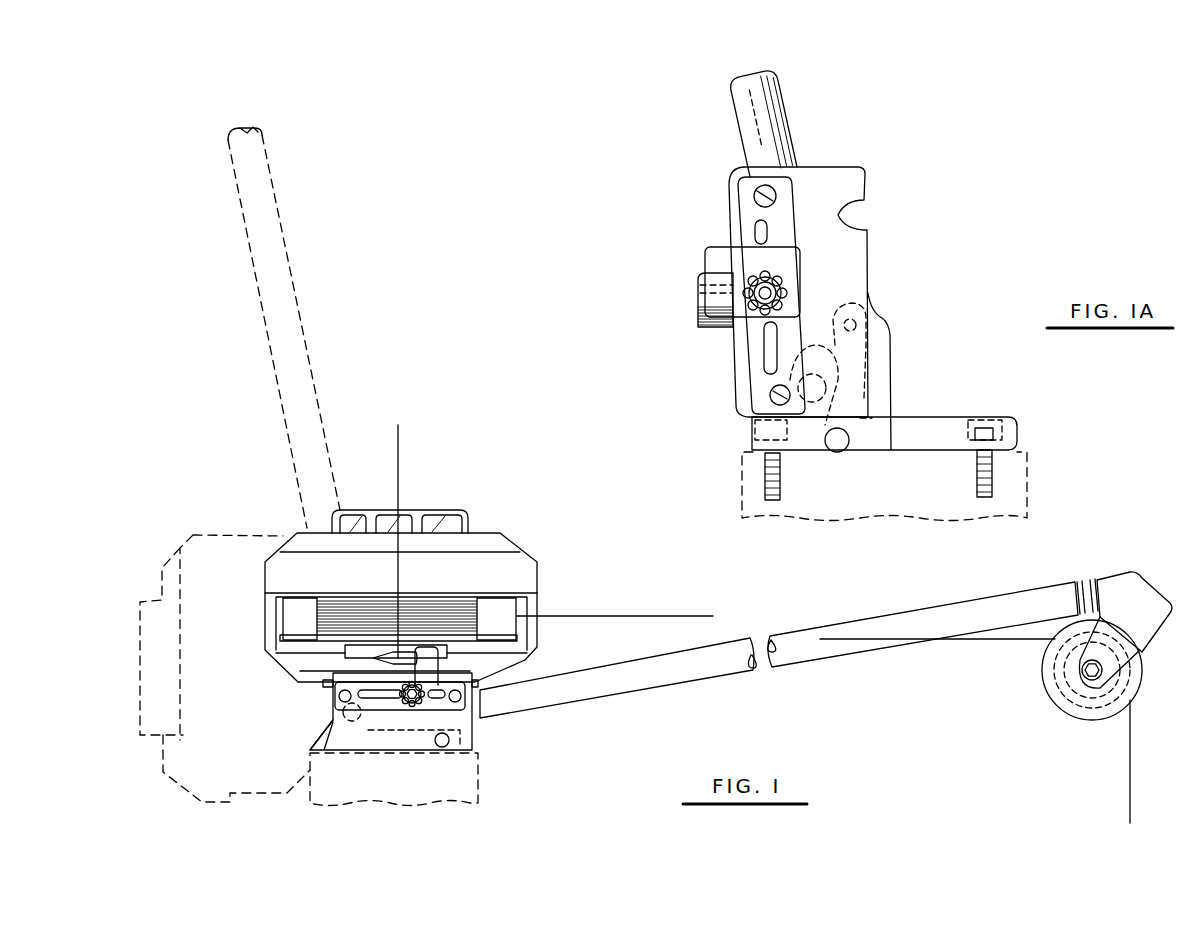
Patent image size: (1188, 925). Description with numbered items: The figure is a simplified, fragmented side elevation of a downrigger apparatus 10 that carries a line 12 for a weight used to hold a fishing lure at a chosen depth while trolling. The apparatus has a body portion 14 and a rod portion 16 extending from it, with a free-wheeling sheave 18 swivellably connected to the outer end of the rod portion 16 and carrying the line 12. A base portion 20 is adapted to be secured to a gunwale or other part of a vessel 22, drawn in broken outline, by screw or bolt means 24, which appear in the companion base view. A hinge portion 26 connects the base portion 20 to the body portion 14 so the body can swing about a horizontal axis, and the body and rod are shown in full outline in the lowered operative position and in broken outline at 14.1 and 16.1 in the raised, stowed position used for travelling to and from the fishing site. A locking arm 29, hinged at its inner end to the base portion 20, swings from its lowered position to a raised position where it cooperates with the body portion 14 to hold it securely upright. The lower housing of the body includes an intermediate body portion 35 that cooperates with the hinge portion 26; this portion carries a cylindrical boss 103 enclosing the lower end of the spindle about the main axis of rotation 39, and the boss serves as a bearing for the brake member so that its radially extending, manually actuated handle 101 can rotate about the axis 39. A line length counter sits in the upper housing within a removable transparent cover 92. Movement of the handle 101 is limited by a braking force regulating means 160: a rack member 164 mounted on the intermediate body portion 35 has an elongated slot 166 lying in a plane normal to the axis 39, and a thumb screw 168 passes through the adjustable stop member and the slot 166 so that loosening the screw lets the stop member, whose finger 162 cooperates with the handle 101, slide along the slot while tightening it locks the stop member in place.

In FIG. 1, the downrigger apparatus 10 is at (514, 523).
In FIG. 1A, the downrigger apparatus 10 is at (932, 156).
In FIG. 1, the line 12 is at (677, 591).
In FIG. 1, the body portion 14 is at (278, 690).
In FIG. 1A, the body portion 14 is at (851, 292).
In FIG. 1, the body portion in raised position 14.1 is at (188, 531).
In FIG. 1, the rod portion 16 is at (670, 668).
In FIG. 1A, the rod portion 16 is at (748, 100).
In FIG. 1, the rod portion in raised position 16.1 is at (300, 305).
In FIG. 1, the free-wheeling sheave 18 is at (1067, 687).
In FIG. 1, the base portion 20 is at (322, 745).
In FIG. 1A, the base portion 20 is at (948, 427).
In FIG. 1, the vessel 22 is at (468, 787).
In FIG. 1A, the vessel 22 is at (1010, 503).
In FIG. 1A, the screw or bolt means 24 is at (763, 480).
In FIG. 1, the hinge portion 26 is at (343, 712).
In FIG. 1A, the hinge portion 26 is at (819, 398).
In FIG. 1A, the locking arm 29 is at (882, 400).
In FIG. 1A, the intermediate body portion 35 is at (880, 297).
In FIG. 1, the main axis of rotation 39 is at (398, 462).
In FIG. 1, the transparent cover 92 is at (443, 523).
In FIG. 1, the handle 101 is at (397, 655).
In FIG. 1A, the cylindrical boss 103 is at (712, 307).
In FIG. 1, the braking force regulating means 160 is at (482, 688).
In FIG. 1A, the braking force regulating means 160 is at (728, 351).
In FIG. 1, the finger 162 is at (430, 655).
In FIG. 1A, the finger 162 is at (713, 260).
In FIG. 1, the rack member 164 is at (445, 705).
In FIG. 1A, the rack member 164 is at (780, 208).
In FIG. 1, the elongated slot 166 is at (387, 700).
In FIG. 1A, the elongated slot 166 is at (757, 230).
In FIG. 1, the thumb screw 168 is at (412, 694).
In FIG. 1A, the thumb screw 168 is at (782, 292).